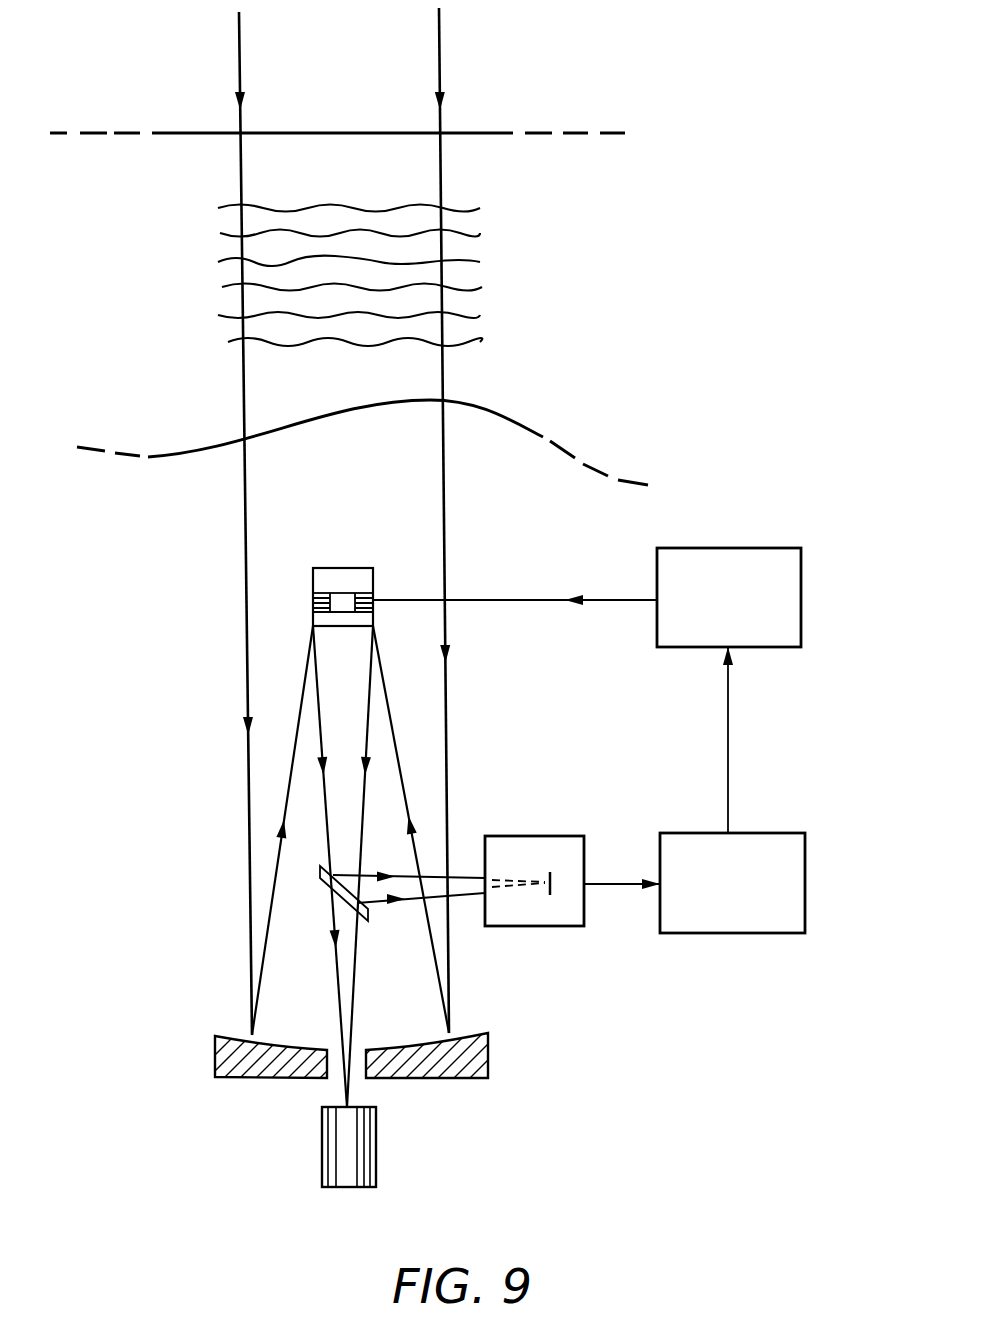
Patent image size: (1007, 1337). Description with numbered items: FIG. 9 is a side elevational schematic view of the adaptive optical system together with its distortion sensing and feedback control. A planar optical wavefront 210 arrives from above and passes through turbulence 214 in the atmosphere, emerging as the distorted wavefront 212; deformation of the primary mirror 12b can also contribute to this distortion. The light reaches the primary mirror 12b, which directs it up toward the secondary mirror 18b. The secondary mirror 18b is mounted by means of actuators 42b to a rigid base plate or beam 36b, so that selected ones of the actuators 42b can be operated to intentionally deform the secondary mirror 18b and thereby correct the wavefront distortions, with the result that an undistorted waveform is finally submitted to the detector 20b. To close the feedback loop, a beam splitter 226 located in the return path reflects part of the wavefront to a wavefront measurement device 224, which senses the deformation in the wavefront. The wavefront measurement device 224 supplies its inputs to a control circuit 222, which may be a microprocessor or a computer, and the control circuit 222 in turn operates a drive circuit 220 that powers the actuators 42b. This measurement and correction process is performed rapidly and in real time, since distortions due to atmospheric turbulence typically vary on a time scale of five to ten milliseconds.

The planar optical wavefront 210 is at (480, 133).
The turbulence 214 is at (480, 263).
The distorted wavefront 212 is at (495, 410).
The rigid base plate or beam 36b is at (313, 580).
The actuators 42b is at (313, 604).
The secondary mirror 18b is at (313, 618).
The beam splitter 226 is at (320, 876).
The wavefront measurement device 224 is at (528, 836).
The control circuit 222 is at (772, 833).
The drive circuit 220 is at (725, 548).
The primary mirror 12b is at (472, 1034).
The detector 20b is at (376, 1150).